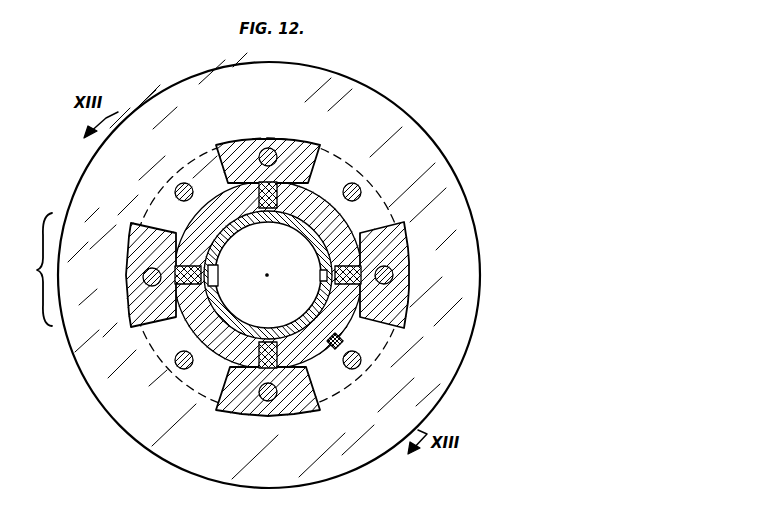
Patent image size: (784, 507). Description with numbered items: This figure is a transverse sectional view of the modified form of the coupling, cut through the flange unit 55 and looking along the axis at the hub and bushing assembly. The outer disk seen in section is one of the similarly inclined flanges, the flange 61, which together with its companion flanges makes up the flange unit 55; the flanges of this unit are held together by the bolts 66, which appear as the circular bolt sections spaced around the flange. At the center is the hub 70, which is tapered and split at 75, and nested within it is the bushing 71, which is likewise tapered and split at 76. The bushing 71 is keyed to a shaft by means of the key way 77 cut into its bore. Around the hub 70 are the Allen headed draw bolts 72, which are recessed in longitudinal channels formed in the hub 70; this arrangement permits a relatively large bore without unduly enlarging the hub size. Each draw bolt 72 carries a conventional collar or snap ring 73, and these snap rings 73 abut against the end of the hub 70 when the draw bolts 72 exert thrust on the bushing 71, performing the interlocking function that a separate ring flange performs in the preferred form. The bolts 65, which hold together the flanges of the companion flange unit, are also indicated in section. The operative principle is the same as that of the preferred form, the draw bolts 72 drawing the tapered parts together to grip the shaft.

The flange unit 55 is at (33, 269).
The inclined flange 61 is at (470, 318).
The bolts 65 is at (270, 139).
The bolts 66 is at (180, 183).
The hub 70 is at (313, 203).
The bushing 71 is at (268, 216).
The draw bolts 72 is at (255, 222).
The snap ring 73 is at (262, 180).
The split 75 is at (192, 232).
The split 76 is at (322, 277).
The key way 77 is at (218, 274).